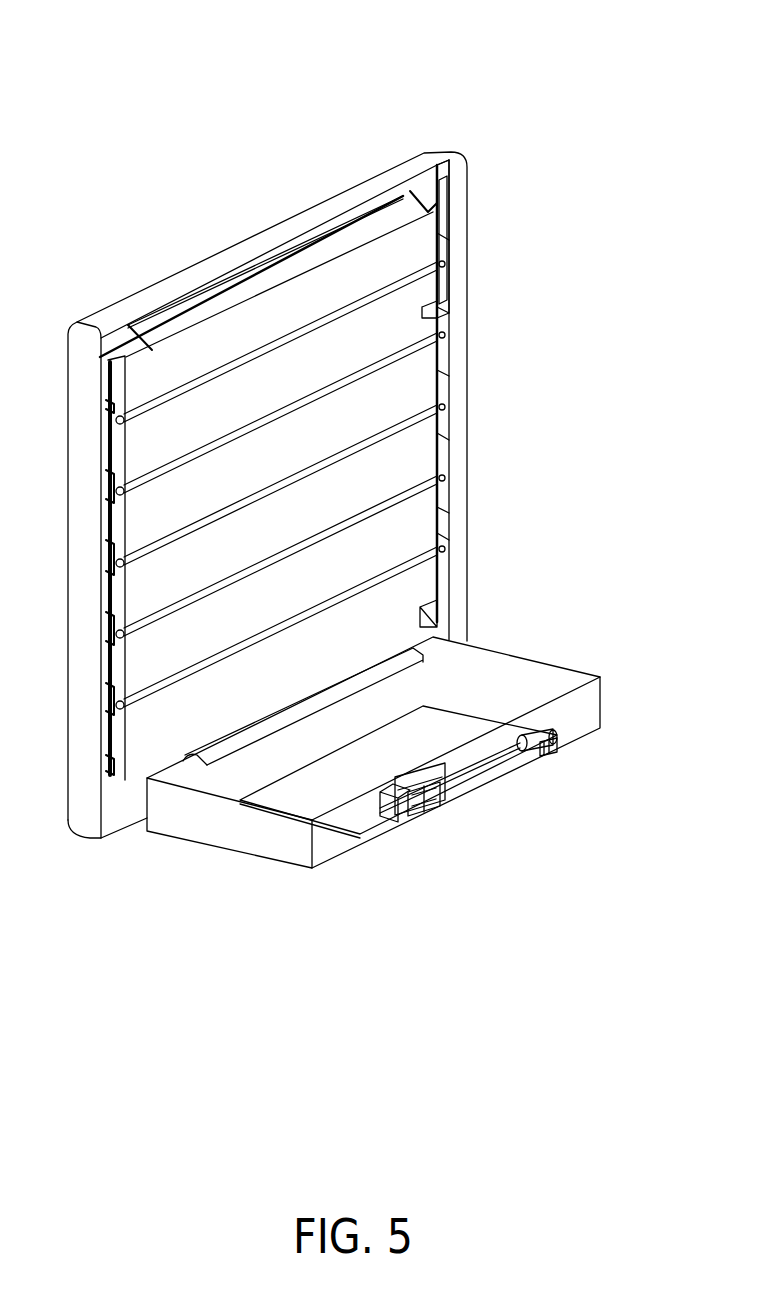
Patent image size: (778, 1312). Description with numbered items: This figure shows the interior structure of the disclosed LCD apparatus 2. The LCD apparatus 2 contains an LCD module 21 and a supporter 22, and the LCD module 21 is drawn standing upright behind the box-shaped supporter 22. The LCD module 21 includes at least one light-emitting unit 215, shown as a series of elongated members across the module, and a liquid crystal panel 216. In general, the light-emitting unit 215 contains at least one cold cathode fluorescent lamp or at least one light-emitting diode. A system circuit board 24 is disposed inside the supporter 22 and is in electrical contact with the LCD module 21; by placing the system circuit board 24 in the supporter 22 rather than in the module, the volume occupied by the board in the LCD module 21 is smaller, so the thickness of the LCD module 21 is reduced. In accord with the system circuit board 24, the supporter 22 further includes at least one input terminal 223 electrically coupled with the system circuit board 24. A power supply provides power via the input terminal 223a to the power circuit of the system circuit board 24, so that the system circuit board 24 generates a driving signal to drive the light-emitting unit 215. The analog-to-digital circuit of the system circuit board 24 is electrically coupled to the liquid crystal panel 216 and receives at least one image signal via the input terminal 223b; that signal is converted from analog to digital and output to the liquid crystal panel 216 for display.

The LCD apparatus 2 is at (76, 30).
The LCD module 21 is at (390, 173).
The supporter 22 is at (226, 830).
The system circuit board 24 is at (477, 725).
The light-emitting unit 215 is at (393, 435).
The liquid crystal panel 216 is at (442, 217).
The input terminal 223 is at (630, 853).
The input terminal 223a is at (545, 748).
The input terminal 223b is at (427, 815).